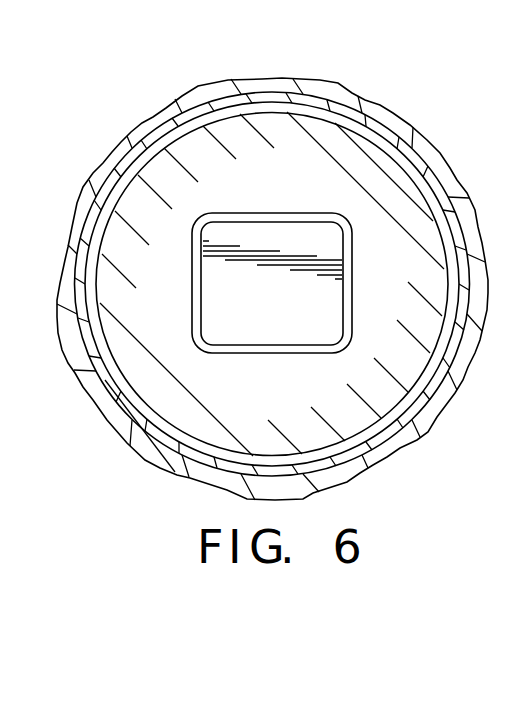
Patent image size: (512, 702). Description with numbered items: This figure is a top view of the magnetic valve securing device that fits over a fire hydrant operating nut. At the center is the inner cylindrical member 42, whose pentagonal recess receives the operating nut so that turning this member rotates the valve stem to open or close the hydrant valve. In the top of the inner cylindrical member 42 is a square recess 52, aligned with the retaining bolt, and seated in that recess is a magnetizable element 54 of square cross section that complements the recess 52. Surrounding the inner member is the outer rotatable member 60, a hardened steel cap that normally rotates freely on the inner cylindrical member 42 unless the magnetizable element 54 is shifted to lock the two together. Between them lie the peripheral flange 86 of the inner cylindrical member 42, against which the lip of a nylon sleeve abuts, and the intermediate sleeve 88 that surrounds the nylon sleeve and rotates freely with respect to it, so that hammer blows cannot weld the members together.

The inner cylindrical member 42 is at (275, 128).
The square recess 52 is at (297, 213).
The magnetizable element 54 is at (278, 306).
The outer rotatable member 60 is at (413, 440).
The peripheral flange 86 is at (342, 131).
The intermediate sleeve 88 is at (160, 137).